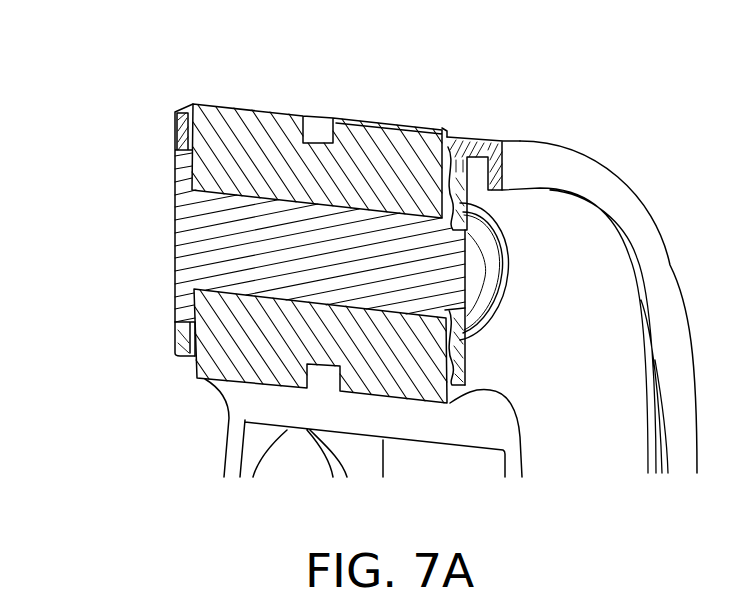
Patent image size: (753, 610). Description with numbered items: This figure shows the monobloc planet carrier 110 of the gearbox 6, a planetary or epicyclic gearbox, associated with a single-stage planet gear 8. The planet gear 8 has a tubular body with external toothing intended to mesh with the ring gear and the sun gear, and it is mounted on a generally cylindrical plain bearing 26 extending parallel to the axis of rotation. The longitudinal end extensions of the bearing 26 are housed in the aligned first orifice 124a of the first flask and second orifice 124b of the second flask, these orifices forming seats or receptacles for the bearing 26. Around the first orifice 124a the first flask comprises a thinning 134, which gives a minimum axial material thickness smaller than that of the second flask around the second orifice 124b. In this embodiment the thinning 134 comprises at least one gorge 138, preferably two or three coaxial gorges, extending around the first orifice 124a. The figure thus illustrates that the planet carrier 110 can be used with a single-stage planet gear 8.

The gearbox 6 is at (317, 91).
The planet gear 8 is at (428, 117).
The plain bearing 26 is at (180, 240).
The first orifice 124a is at (490, 267).
The second orifice 124b is at (181, 328).
The thinning 134 is at (489, 351).
The gorge 138 is at (500, 297).
The planet carrier 110 is at (642, 488).